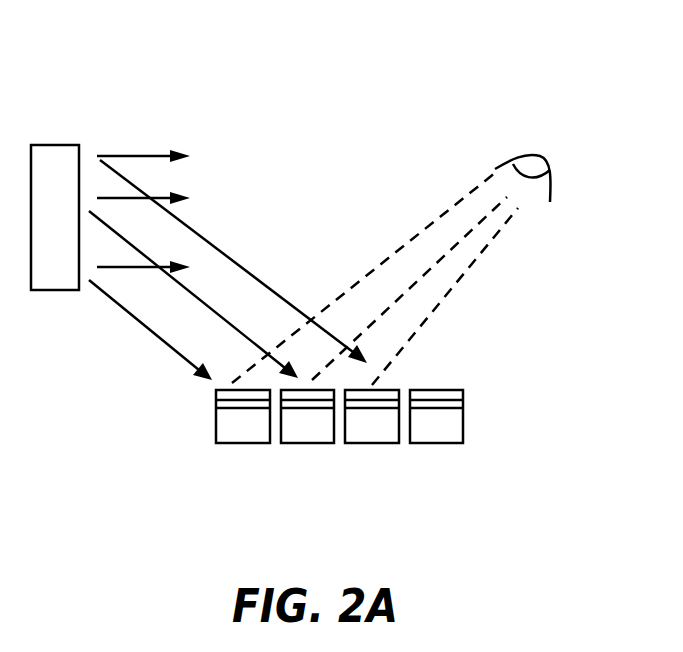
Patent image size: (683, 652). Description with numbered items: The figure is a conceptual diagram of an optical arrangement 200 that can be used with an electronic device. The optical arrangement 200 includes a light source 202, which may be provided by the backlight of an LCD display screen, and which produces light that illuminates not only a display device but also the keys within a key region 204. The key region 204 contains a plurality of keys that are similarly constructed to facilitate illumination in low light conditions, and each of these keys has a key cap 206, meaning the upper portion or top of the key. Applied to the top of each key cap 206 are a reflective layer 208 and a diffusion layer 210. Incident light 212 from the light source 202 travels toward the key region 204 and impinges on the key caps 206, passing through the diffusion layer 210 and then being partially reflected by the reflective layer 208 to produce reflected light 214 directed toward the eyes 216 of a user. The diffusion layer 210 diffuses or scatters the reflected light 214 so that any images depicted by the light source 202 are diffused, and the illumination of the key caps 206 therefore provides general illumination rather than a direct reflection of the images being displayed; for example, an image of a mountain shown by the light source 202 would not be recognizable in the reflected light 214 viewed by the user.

The optical arrangement 200 is at (348, 100).
The light source 202 is at (60, 145).
The key region 204 is at (492, 373).
The key cap 206 is at (216, 430).
The reflective layer 208 is at (216, 405).
The diffusion layer 210 is at (216, 393).
The incident light 212 is at (233, 253).
The reflected light 214 is at (477, 253).
The eyes 216 is at (552, 182).